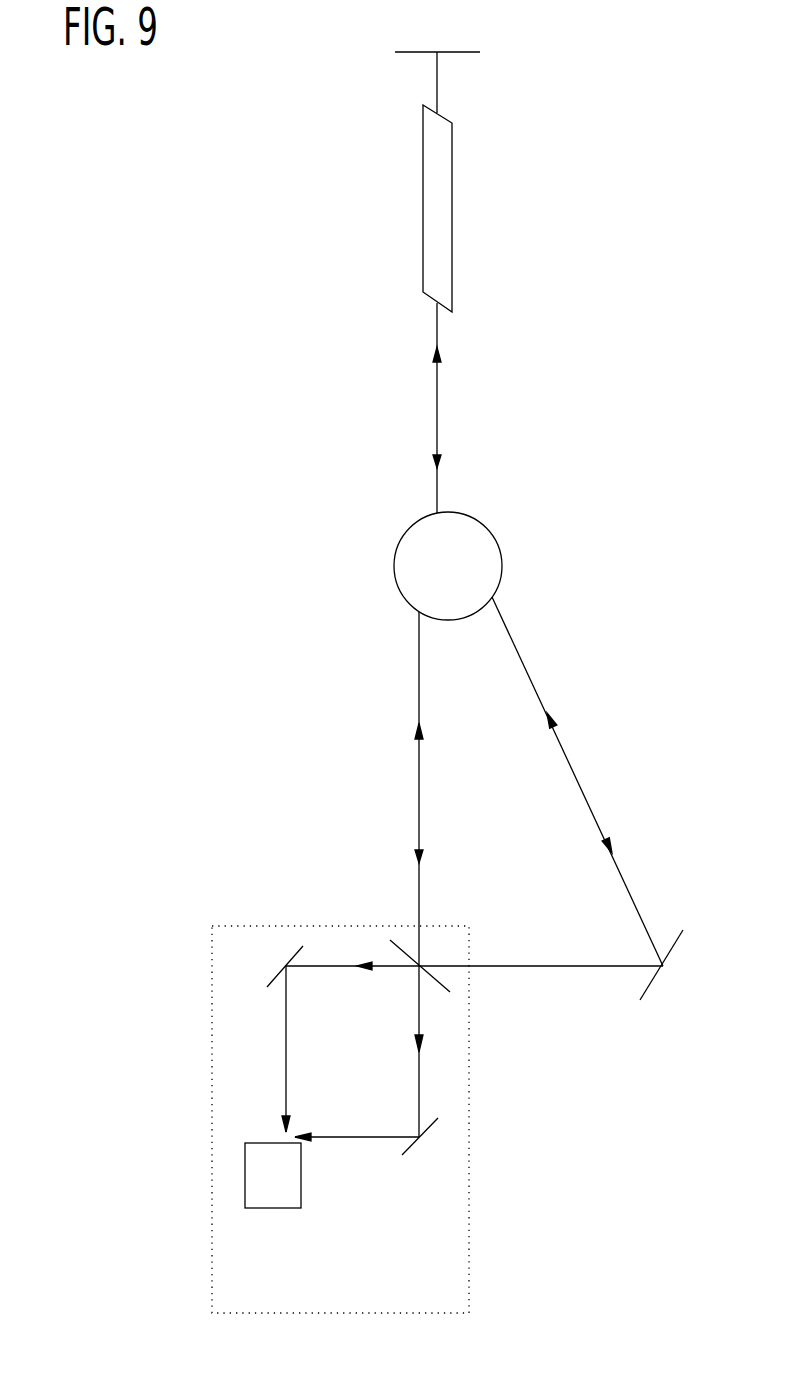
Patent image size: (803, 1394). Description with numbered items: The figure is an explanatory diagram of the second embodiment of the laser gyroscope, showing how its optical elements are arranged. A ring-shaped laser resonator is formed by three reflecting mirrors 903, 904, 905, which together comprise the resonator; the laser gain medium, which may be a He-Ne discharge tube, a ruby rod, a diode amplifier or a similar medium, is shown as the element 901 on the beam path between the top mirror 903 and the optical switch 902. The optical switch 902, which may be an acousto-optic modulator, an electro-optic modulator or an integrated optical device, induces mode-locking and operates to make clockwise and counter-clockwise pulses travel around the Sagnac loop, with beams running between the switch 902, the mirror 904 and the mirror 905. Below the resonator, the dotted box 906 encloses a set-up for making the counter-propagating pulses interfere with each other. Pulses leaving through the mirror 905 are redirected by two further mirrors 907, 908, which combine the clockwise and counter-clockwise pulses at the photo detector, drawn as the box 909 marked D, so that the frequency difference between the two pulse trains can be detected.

The rotating plate / sample 901 is at (423, 182).
The optical switch 902 is at (395, 567).
The reflecting mirror 903 is at (395, 52).
The reflecting mirror 904 is at (673, 938).
The reflecting mirror 905 is at (400, 942).
The set-up for making the counter-propagating pulses interfere 906 is at (212, 1048).
The mirror 907 is at (291, 946).
The mirror 908 is at (405, 1153).
The detector 909 is at (270, 1208).